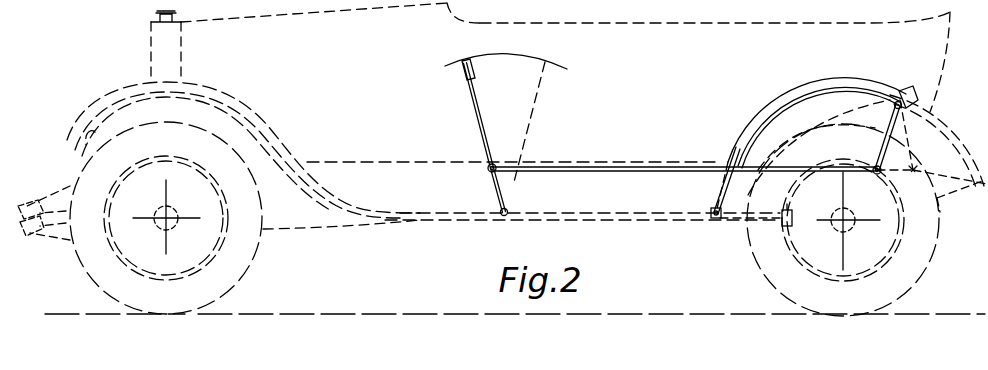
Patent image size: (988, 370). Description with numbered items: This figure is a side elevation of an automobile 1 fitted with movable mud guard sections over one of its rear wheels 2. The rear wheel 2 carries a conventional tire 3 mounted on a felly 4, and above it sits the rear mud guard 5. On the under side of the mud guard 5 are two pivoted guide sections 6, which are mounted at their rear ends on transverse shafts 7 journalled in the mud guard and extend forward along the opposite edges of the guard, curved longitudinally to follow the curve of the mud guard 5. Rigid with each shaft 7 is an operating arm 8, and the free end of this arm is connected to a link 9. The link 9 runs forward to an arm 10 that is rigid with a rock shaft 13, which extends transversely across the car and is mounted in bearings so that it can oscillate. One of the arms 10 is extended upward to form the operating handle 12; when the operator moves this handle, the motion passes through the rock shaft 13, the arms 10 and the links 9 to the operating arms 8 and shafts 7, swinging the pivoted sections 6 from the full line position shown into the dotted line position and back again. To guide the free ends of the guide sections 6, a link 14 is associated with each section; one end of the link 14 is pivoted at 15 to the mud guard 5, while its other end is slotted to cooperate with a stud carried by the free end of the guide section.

The automobile 1 is at (484, 158).
The rear wheels 2 is at (898, 254).
The tire 3 is at (898, 289).
The felly 4 is at (800, 257).
The rear mud guard 5 is at (957, 137).
The pivoted guide sections 6 is at (786, 105).
The transverse shafts 7 is at (897, 100).
The operating arm 8 is at (882, 158).
The link 9 is at (612, 172).
The arms 10 is at (493, 188).
The operating handle 12 is at (472, 104).
The rock shaft 13 is at (501, 220).
The link 14 is at (716, 193).
The pivot 15 is at (716, 222).